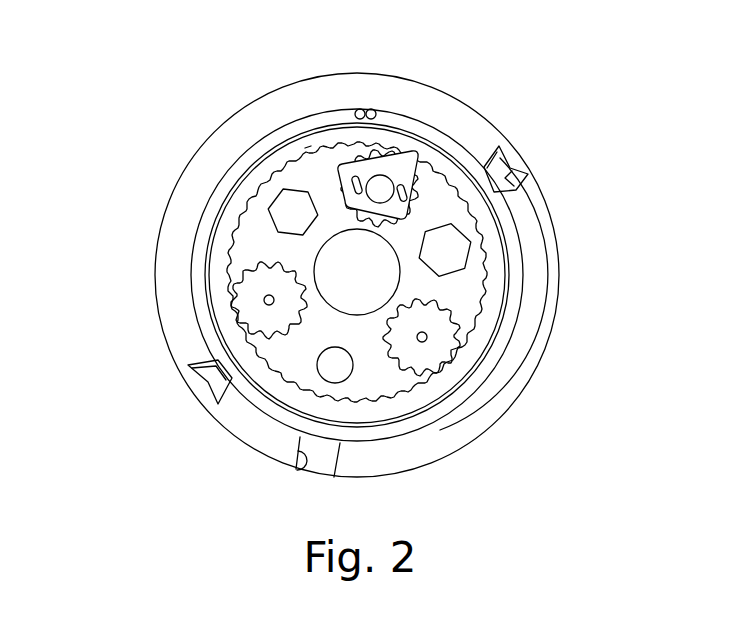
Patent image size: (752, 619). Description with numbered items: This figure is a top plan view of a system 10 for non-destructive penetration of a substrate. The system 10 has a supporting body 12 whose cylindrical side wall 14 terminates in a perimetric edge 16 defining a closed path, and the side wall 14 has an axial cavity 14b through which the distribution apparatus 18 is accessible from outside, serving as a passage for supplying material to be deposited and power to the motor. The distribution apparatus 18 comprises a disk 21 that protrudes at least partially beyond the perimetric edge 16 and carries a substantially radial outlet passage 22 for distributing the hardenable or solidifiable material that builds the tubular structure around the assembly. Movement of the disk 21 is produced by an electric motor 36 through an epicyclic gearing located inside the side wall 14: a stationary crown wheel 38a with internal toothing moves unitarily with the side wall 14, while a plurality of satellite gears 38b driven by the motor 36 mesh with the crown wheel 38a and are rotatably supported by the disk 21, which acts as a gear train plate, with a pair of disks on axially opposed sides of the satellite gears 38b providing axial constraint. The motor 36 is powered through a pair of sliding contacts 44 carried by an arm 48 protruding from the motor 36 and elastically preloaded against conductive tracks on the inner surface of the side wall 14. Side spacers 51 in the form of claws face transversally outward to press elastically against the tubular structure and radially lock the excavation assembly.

The system for non-destructive penetration of a substrate 10 is at (565, 80).
The supporting body 12 is at (416, 108).
The side wall 14 is at (517, 243).
The axial cavity 14b is at (230, 200).
The perimetric edge 16 is at (483, 392).
The distribution apparatus 18 is at (552, 345).
The disk 21 is at (545, 287).
The radial outlet passage 22 is at (305, 472).
The motor 36 is at (403, 173).
The stationary crown wheel 38a is at (483, 306).
The satellite gears 38b is at (425, 188).
The sliding contacts 44 is at (310, 145).
The arm 48 is at (340, 160).
The side spacers 51 is at (512, 174).